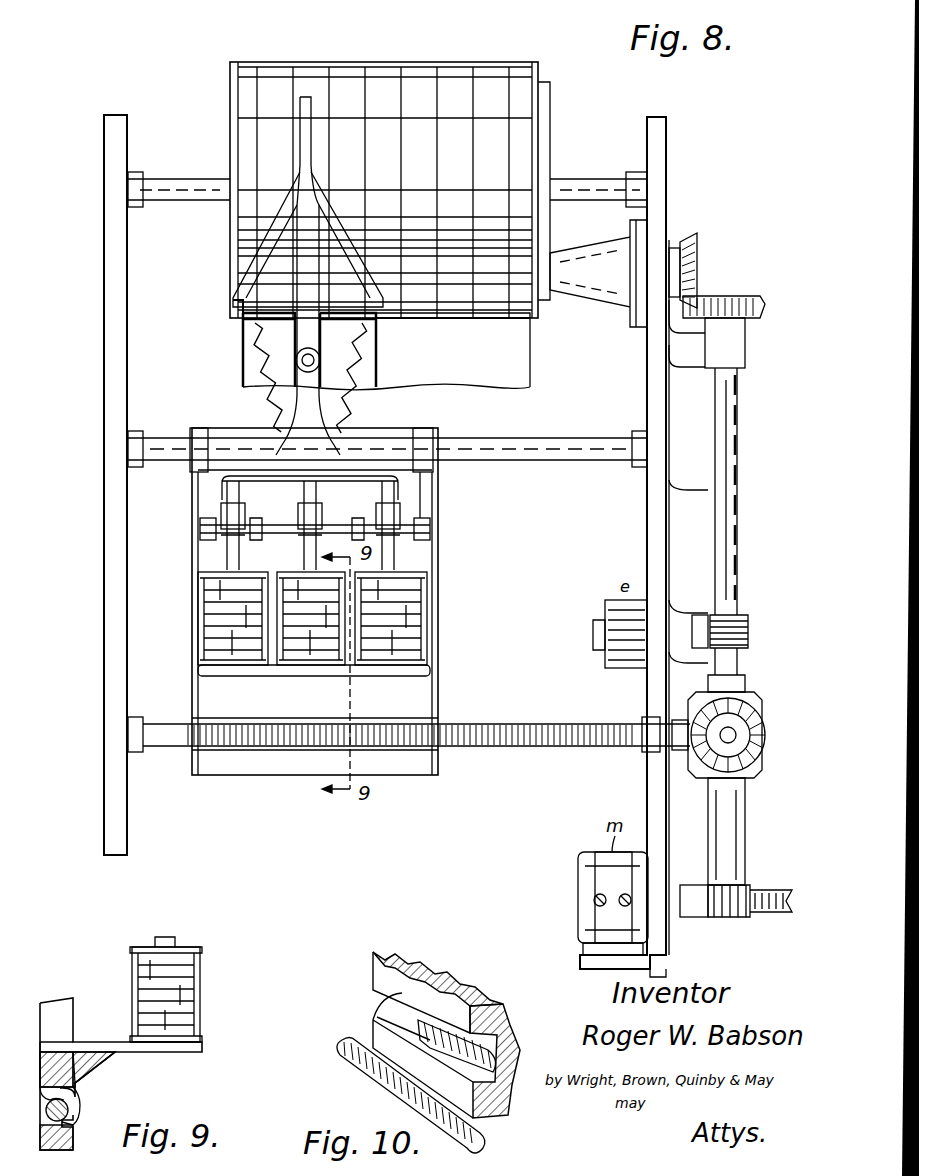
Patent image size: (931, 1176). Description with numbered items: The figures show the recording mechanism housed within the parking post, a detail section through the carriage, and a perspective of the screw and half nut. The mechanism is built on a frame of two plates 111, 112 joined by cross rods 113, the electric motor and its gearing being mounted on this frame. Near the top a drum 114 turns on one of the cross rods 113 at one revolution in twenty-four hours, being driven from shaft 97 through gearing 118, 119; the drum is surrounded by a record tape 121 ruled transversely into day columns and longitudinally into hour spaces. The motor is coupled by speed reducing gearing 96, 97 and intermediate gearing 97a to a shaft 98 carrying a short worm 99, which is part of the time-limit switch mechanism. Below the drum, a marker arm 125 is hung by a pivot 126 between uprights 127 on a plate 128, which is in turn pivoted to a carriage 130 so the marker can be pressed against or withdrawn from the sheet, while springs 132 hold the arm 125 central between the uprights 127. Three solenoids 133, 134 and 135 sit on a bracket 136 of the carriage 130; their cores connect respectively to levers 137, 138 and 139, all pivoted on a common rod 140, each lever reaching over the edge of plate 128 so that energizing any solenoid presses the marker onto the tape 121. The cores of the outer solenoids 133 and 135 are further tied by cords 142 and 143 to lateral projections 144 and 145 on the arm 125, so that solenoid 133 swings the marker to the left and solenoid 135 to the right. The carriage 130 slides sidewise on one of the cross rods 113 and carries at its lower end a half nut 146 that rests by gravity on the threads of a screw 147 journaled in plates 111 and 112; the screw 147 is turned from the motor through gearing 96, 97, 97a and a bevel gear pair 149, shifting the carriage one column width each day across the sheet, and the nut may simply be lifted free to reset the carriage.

In FIG. 8, the frame plate 111 is at (104, 385).
In FIG. 8, the frame plate 112 is at (647, 528).
In FIG. 8, the cross rods 113 is at (185, 195).
In FIG. 8, the drum 114 is at (540, 132).
In FIG. 8, the gearing 118 is at (692, 240).
In FIG. 8, the gearing 119 is at (556, 262).
In FIG. 8, the record tape 121 is at (392, 62).
In FIG. 8, the marker arm 125 is at (305, 133).
In FIG. 8, the pivot 126 is at (320, 360).
In FIG. 8, the uprights 127 is at (322, 428).
In FIG. 8, the plate 128 is at (436, 448).
In FIG. 8, the carriage 130 is at (440, 690).
In FIG. 9, the carriage 130 is at (88, 1042).
In FIG. 10, the carriage 130 is at (445, 974).
In FIG. 8, the springs 132 is at (268, 400).
In FIG. 8, the solenoid 133 is at (212, 642).
In FIG. 8, the solenoid 134 is at (314, 662).
In FIG. 9, the solenoid 134 is at (200, 990).
In FIG. 8, the solenoid 135 is at (428, 645).
In FIG. 8, the bracket 136 is at (212, 674).
In FIG. 8, the lever 137 is at (222, 482).
In FIG. 8, the lever 138 is at (322, 505).
In FIG. 8, the lever 139 is at (437, 492).
In FIG. 8, the common rod 140 is at (277, 526).
In FIG. 8, the cord 142 is at (243, 370).
In FIG. 8, the cord 143 is at (372, 318).
In FIG. 8, the lateral projection 144 is at (236, 306).
In FIG. 8, the lateral projection 145 is at (445, 318).
In FIG. 9, the half nut 146 is at (65, 1118).
In FIG. 10, the half nut 146 is at (495, 1062).
In FIG. 8, the screw 147 is at (552, 727).
In FIG. 9, the screw 147 is at (68, 1112).
In FIG. 10, the screw 147 is at (348, 1052).
In FIG. 8, the bevel gear pair 149 is at (690, 765).
In FIG. 8, the speed reducing gearing 96 is at (735, 917).
In FIG. 8, the speed reducing gearing 97 is at (770, 890).
In FIG. 8, the intermediate gearing 97a is at (758, 780).
In FIG. 8, the shaft 98 is at (737, 560).
In FIG. 8, the worm 99 is at (750, 640).